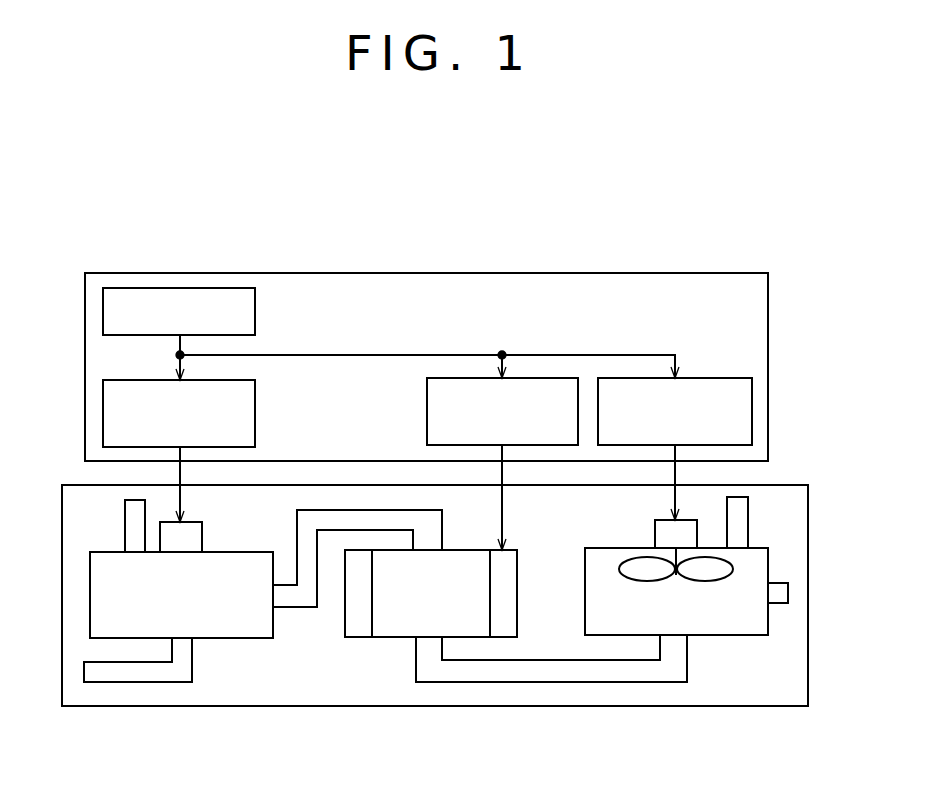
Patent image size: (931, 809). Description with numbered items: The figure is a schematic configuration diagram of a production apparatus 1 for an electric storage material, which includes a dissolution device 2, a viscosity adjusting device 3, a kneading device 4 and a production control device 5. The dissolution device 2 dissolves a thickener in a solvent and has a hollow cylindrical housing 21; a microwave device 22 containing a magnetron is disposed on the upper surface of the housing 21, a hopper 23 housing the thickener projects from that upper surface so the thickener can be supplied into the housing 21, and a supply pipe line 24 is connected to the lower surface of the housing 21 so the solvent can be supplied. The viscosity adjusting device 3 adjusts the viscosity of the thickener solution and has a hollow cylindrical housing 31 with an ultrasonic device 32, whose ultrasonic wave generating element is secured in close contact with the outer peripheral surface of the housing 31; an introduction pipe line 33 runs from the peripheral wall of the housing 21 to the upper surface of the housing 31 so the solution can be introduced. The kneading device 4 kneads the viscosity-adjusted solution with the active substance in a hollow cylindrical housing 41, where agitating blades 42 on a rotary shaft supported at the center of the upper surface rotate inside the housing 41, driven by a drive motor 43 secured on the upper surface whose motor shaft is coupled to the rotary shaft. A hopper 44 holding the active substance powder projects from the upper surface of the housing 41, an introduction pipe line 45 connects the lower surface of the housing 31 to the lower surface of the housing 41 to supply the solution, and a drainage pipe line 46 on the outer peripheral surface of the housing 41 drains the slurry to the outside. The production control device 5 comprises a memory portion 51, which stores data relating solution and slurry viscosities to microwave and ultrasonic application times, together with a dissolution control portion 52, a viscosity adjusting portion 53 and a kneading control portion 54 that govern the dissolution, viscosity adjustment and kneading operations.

The production apparatus 1 is at (558, 222).
The dissolution device 2 is at (243, 658).
The viscosity adjusting device 3 is at (385, 650).
The kneading device 4 is at (700, 650).
The production control device 5 is at (408, 272).
The housing 21 is at (232, 552).
The microwave device 22 is at (199, 521).
The hopper 23 is at (125, 525).
The supply pipe line 24 is at (177, 682).
The housing 31 is at (448, 548).
The ultrasonic device 32 is at (513, 598).
The introduction pipe line 33 is at (413, 514).
The housing 41 is at (618, 548).
The agitating blades 42 is at (717, 582).
The drive motor 43 is at (657, 520).
The hopper 44 is at (748, 533).
The introduction pipe line 45 is at (525, 668).
The drainage pipe line 46 is at (778, 603).
The memory portion 51 is at (257, 310).
The dissolution control portion 52 is at (257, 410).
The viscosity adjusting portion 53 is at (522, 378).
The kneading control portion 54 is at (695, 378).